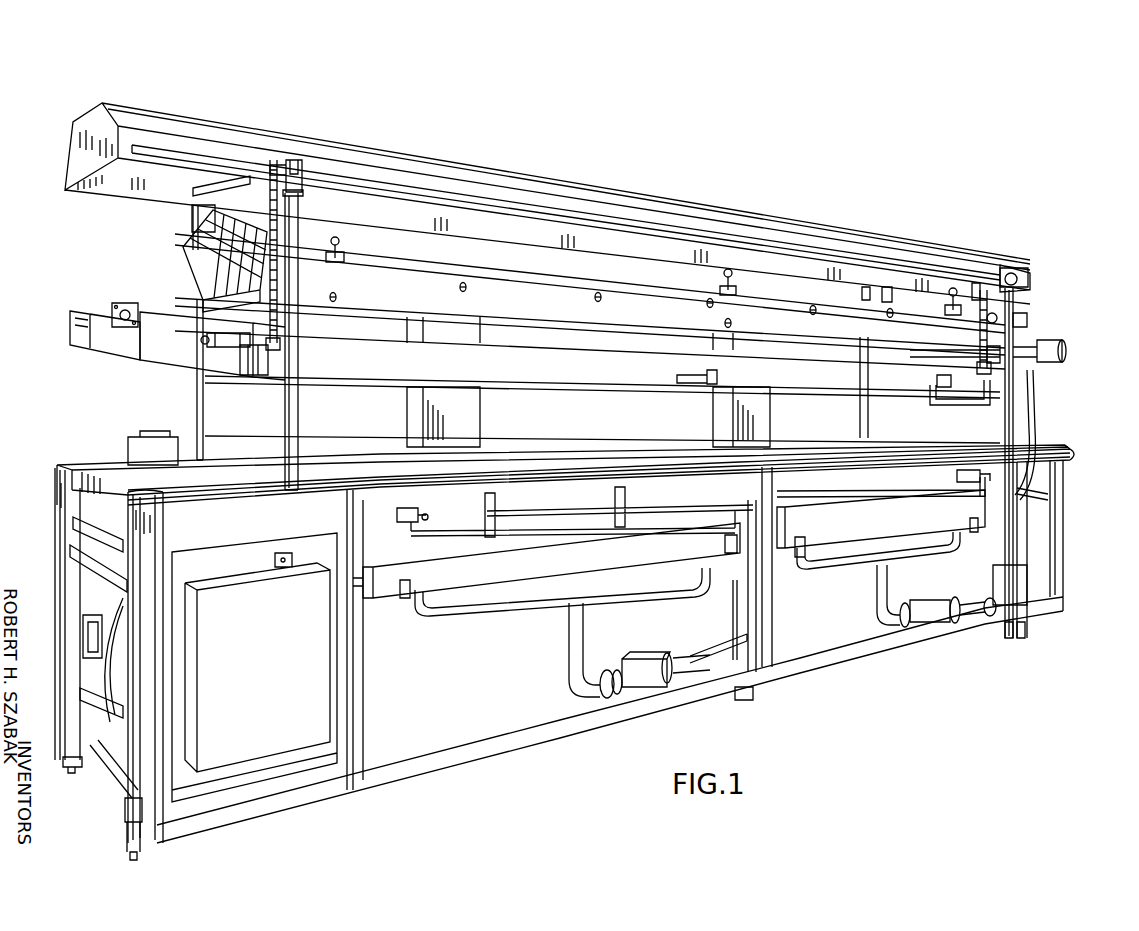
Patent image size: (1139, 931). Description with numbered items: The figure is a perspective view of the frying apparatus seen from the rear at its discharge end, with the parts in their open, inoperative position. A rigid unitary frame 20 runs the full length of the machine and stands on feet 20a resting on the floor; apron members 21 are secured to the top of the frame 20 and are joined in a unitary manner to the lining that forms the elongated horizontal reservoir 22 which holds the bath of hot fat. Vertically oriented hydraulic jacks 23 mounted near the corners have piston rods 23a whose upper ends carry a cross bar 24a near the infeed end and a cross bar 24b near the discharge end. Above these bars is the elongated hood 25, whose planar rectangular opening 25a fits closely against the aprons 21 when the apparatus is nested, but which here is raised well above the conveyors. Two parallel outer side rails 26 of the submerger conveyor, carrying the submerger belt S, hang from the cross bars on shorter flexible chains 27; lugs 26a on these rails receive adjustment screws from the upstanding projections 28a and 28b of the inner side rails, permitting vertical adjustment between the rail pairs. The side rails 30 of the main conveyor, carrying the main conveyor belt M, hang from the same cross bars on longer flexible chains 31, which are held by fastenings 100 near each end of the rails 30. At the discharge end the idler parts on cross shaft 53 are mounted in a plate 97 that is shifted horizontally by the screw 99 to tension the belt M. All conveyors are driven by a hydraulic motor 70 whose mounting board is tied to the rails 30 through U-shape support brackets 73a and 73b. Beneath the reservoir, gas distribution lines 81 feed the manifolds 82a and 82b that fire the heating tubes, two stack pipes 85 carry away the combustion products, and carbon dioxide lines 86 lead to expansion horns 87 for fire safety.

The frame 20 is at (60, 500).
The feet 20a is at (65, 757).
The apron members 21 is at (95, 465).
The reservoir 22 is at (73, 522).
The hydraulic jacks 23 is at (993, 570).
The piston rods 23a is at (197, 392).
The cross bar 24a is at (1025, 268).
The cross bar 24b is at (292, 160).
The hood 25 is at (532, 182).
The rectangular opening 25a is at (105, 190).
The outer side rails 26 is at (566, 292).
The lugs 26a is at (458, 285).
The flexible chains 27 is at (285, 175).
The vertically upstanding projection 28a is at (722, 288).
The vertically upstanding projection 28b is at (344, 255).
The side rails 30 is at (570, 385).
The flexible chains 31 is at (193, 238).
The cross shaft 53 is at (125, 303).
The motor 70 is at (1058, 360).
The U-shape support bracket 73a is at (1010, 425).
The U-shape support bracket 73b is at (930, 398).
The distribution lines 81 is at (583, 618).
The manifold 82a is at (881, 529).
The manifold 82b is at (546, 569).
The stack pipes 85 is at (480, 426).
The lines 86 is at (700, 508).
The expansion horns 87 is at (397, 515).
The plate 97 is at (175, 318).
The screw 99 is at (250, 322).
The fastenings 100 is at (262, 375).
The main conveyor belt M is at (90, 330).
The submerger belt S is at (183, 262).